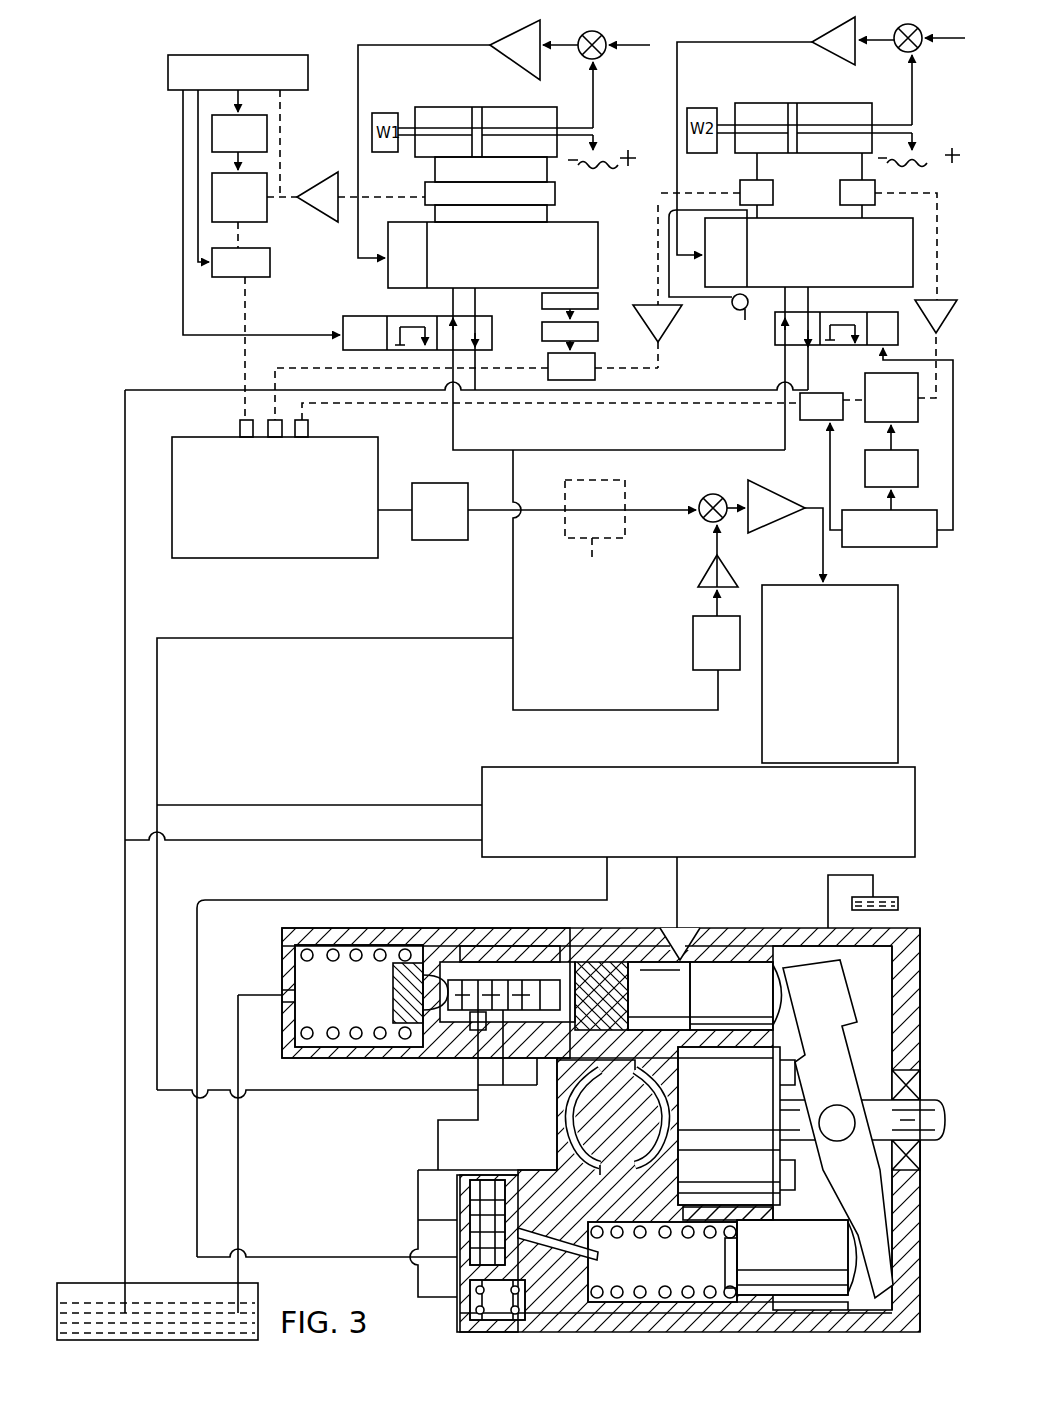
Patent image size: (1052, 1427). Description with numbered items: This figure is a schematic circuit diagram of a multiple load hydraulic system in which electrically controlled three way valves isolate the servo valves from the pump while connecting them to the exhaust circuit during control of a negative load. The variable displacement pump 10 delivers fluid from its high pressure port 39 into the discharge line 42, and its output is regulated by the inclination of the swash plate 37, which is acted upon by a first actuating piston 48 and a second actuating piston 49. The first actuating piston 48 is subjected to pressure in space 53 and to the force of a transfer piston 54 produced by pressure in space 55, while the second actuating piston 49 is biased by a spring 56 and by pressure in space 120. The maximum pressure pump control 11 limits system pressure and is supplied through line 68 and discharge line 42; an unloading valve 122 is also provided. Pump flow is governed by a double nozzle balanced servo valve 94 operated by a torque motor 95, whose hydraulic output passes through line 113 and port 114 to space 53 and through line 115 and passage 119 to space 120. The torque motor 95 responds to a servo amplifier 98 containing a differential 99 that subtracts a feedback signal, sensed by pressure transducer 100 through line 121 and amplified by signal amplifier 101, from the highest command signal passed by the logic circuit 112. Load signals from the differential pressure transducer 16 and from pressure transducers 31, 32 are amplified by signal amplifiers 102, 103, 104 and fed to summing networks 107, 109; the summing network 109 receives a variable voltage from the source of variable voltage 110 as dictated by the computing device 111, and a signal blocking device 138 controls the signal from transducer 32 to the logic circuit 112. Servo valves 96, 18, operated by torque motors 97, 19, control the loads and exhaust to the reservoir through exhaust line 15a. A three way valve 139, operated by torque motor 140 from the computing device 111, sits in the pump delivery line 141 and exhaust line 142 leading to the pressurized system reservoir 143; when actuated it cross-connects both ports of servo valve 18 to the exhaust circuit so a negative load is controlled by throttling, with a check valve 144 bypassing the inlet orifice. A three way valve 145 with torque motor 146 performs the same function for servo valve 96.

The variable displacement pump 10 is at (917, 1262).
The pump control 11 is at (333, 1052).
The exhaust line 15a is at (128, 1225).
The differential pressure transducer 16 is at (490, 189).
The servo valve 18 is at (809, 334).
The torque motor 19 is at (740, 169).
The pressure transducer 31 is at (773, 197).
The pressure transducer 32 is at (842, 190).
The swash plate 37 is at (843, 1062).
The high pressure port 39 is at (655, 1118).
The discharge line 42 is at (319, 638).
The first actuating piston 48 is at (736, 996).
The second actuating piston 49 is at (815, 1258).
The space 53 is at (659, 996).
The transfer piston 54 is at (601, 996).
The space 55 is at (601, 1017).
The spring 56 is at (680, 1292).
The line 68 is at (356, 805).
The servo valve 94 is at (698, 812).
The torque motor 95 is at (830, 674).
The servo valve 96 is at (586, 336).
The torque motor 97 is at (424, 166).
The servo amplifier 98 is at (772, 504).
The differential 99 is at (714, 498).
The pressure transducer 100 is at (716, 630).
The signal amplifier 101 is at (703, 575).
The signal amplifier 102 is at (333, 212).
The signal amplifier 103 is at (672, 320).
The signal amplifier 104 is at (930, 327).
The summing network 107 is at (466, 386).
The summing network 109 is at (574, 297).
The source of variable voltage 110 is at (565, 301).
The computing device 111 is at (560, 301).
The logic circuit 112 is at (275, 489).
The line 113 is at (680, 880).
The port 114 is at (686, 935).
The line 115 is at (607, 885).
The passage 119 is at (602, 1256).
The space 120 is at (714, 1263).
The line 121 is at (612, 710).
The unloading valve 122 is at (513, 1203).
The signal blocking device 138 is at (527, 334).
The three way valve 139 is at (438, 540).
The torque motor 140 is at (733, 450).
The pump delivery line 141 is at (783, 372).
The exhaust line 142 is at (810, 372).
The system reservoir 143 is at (882, 900).
The check valve 144 is at (750, 318).
The three way valve 145 is at (430, 318).
The torque motor 146 is at (417, 333).